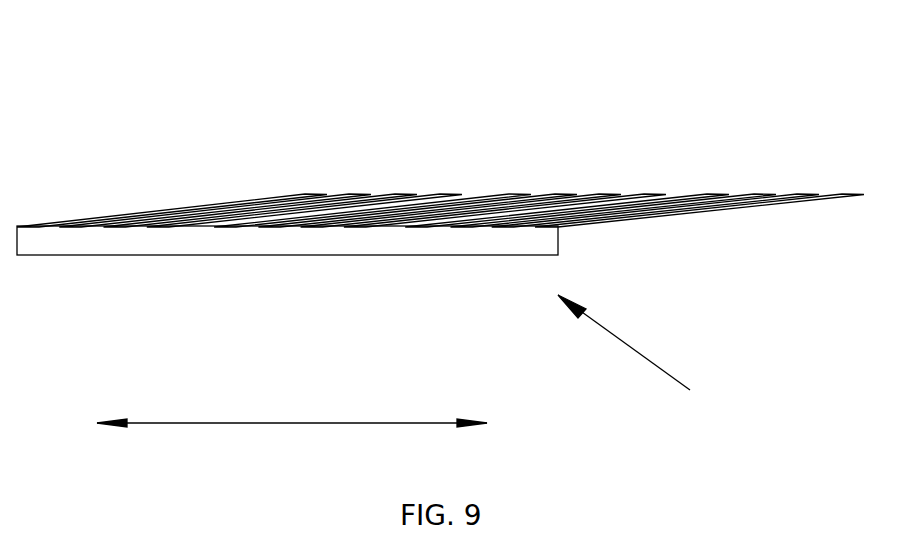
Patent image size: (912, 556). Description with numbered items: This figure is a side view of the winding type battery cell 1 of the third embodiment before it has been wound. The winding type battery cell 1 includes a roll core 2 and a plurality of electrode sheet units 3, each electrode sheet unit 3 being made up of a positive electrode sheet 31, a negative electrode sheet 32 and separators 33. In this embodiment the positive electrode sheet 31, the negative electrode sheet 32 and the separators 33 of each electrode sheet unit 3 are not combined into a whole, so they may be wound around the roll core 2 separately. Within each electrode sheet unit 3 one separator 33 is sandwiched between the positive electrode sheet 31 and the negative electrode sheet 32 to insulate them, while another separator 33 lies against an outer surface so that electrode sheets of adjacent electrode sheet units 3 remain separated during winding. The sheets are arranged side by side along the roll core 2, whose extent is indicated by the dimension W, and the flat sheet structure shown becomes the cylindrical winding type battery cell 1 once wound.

The winding type battery cell 1 is at (635, 354).
The roll core 2 is at (248, 243).
The electrode sheet unit 3 is at (453, 57).
The positive electrode sheet 31 is at (351, 193).
The negative electrode sheet 32 is at (442, 193).
The separator 33 is at (307, 193).
The width W is at (292, 442).